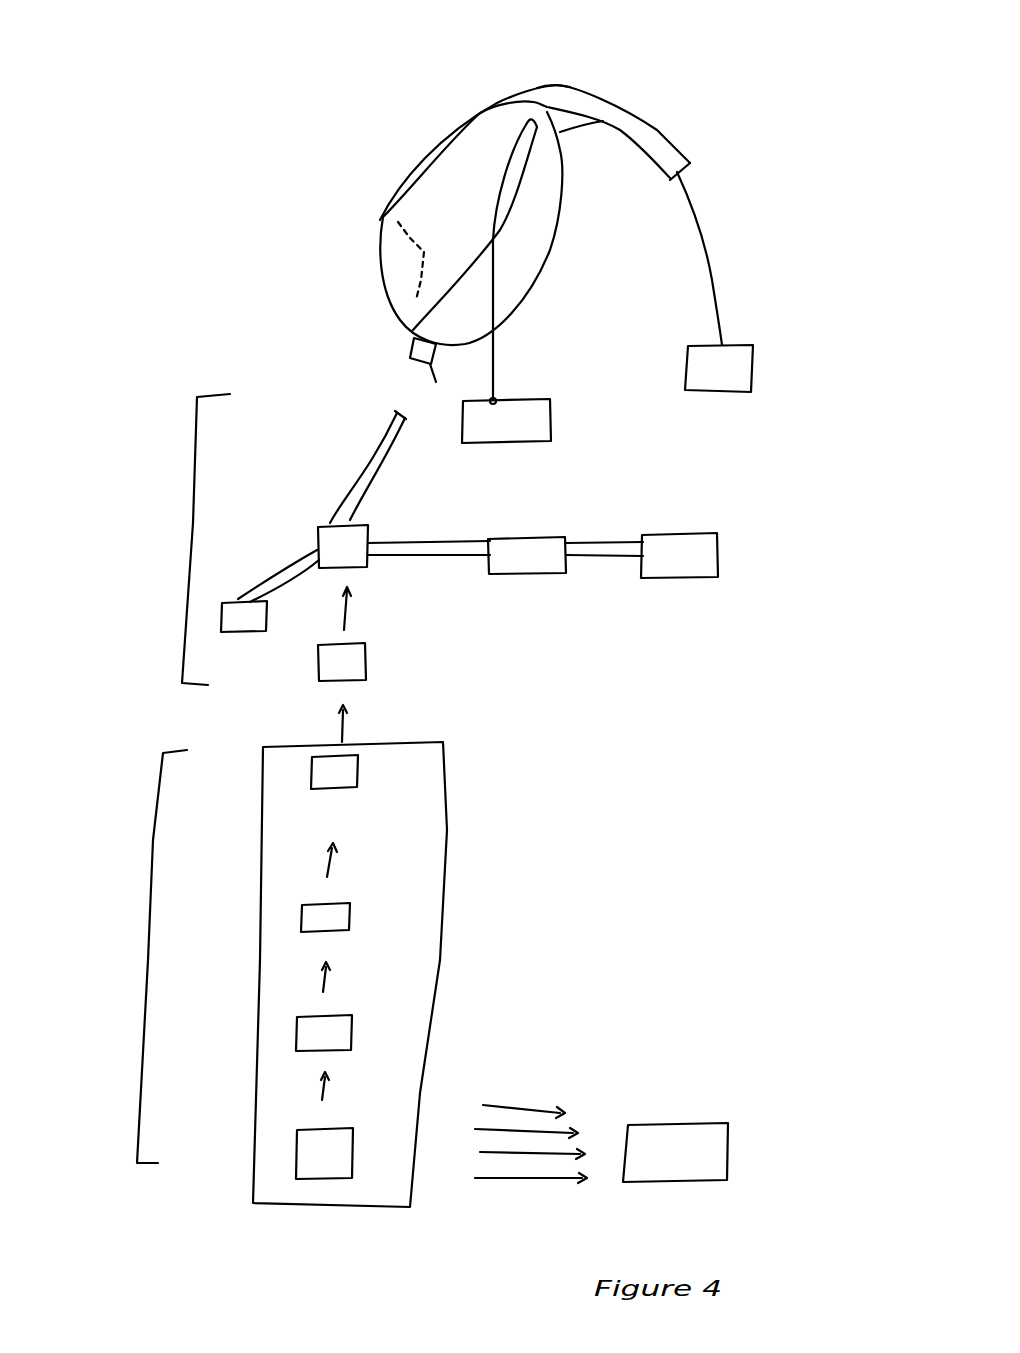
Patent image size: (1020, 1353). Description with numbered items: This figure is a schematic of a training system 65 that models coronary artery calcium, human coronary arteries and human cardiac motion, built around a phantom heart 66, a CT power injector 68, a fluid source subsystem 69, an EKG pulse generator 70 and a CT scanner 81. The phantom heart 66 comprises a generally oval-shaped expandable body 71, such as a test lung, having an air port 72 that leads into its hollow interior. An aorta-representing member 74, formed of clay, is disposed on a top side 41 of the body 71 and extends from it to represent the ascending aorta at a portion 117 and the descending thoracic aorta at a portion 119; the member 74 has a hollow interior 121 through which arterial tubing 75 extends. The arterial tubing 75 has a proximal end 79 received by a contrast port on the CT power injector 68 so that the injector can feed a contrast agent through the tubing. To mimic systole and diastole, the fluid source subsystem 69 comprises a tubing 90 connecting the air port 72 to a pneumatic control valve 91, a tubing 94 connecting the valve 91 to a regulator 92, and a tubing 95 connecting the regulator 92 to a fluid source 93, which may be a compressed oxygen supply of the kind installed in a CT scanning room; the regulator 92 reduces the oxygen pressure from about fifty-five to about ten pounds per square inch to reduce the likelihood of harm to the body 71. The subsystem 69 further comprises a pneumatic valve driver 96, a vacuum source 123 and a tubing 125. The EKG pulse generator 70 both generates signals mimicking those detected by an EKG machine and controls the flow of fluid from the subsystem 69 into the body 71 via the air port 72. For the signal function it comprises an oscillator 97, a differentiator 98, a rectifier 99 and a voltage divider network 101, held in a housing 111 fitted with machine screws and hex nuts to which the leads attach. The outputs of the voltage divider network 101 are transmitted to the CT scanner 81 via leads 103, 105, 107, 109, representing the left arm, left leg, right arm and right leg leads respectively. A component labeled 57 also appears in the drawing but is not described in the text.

The top side 41 is at (604, 111).
The power source 57 is at (745, 377).
The training system 65 is at (604, 111).
The phantom heart 66 is at (250, 171).
The CT power injector 68 is at (506, 421).
The fluid source subsystem 69 is at (192, 527).
The EKG pulse generator 70 is at (150, 943).
The expandable body 71 is at (429, 117).
The air port 72 is at (406, 399).
The aorta-representing member 74 is at (497, 234).
The arterial tubing 75 is at (504, 366).
The proximal end 79 is at (503, 402).
The CT scanner 81 is at (675, 1152).
The tubing 90 is at (387, 460).
The pneumatic control valve 91 is at (318, 545).
The regulator 92 is at (520, 546).
The fluid source 93 is at (705, 548).
The tubing 94 is at (432, 542).
The tubing 95 is at (612, 542).
The pneumatic valve driver 96 is at (364, 658).
The oscillator 97 is at (350, 767).
The differentiator 98 is at (343, 915).
The rectifier 99 is at (343, 1030).
The voltage divider network 101 is at (337, 1157).
The lead 103 is at (497, 1099).
The lead 105 is at (508, 1124).
The lead 107 is at (512, 1152).
The lead 109 is at (509, 1182).
The housing 111 is at (393, 953).
The portion 117 is at (555, 80).
The portion 119 is at (653, 130).
The hollow interior 121 is at (692, 179).
The vacuum source 123 is at (242, 618).
The tubing 125 is at (283, 577).